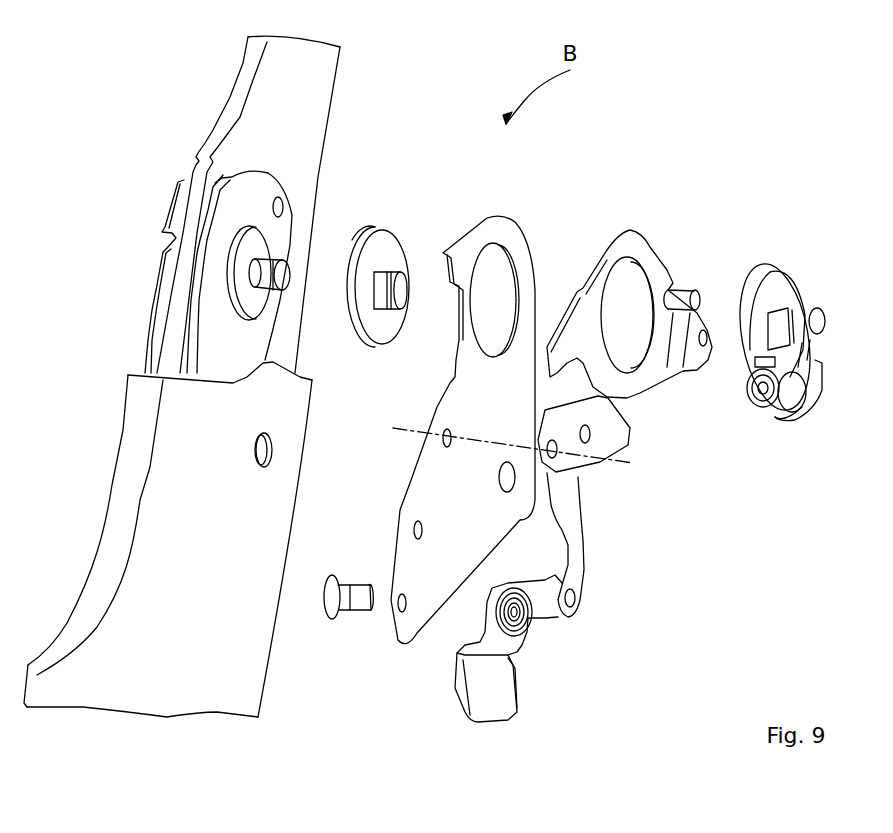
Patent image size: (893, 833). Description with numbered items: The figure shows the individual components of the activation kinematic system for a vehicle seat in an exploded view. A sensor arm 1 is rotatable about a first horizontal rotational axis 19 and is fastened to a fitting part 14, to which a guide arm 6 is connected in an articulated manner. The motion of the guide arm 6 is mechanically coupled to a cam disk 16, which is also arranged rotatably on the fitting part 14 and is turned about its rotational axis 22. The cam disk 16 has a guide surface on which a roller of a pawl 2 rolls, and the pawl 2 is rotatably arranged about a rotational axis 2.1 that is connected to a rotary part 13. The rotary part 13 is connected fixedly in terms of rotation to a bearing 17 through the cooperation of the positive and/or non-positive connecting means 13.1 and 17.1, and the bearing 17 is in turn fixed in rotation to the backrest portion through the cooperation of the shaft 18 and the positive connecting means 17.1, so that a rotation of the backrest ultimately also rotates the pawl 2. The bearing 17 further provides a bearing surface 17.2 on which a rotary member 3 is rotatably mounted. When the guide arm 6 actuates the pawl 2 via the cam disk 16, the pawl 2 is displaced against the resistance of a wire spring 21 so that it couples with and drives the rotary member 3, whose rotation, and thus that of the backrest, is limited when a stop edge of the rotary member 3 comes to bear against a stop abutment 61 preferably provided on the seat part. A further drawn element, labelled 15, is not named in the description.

The stop abutment 61 is at (108, 371).
The shaft 18 is at (268, 270).
The bearing 17 is at (392, 252).
The bearing surface 17.2 is at (363, 250).
The positive connecting means 17.1 is at (383, 343).
The fitting part 14 is at (505, 230).
The rotational axis 22 is at (400, 430).
The cam disk 16 is at (603, 433).
The guide arm 6 is at (590, 555).
The sensor arm 1 is at (493, 692).
The first horizontal rotational axis 19 is at (335, 613).
The rotary member 3 is at (637, 245).
The pin 15 is at (676, 288).
The rotary part 13 is at (777, 283).
The connecting means 13.1 is at (788, 312).
The rotational axis 2.1 is at (791, 398).
The pawl 2 is at (811, 393).
The wire spring 21 is at (801, 347).